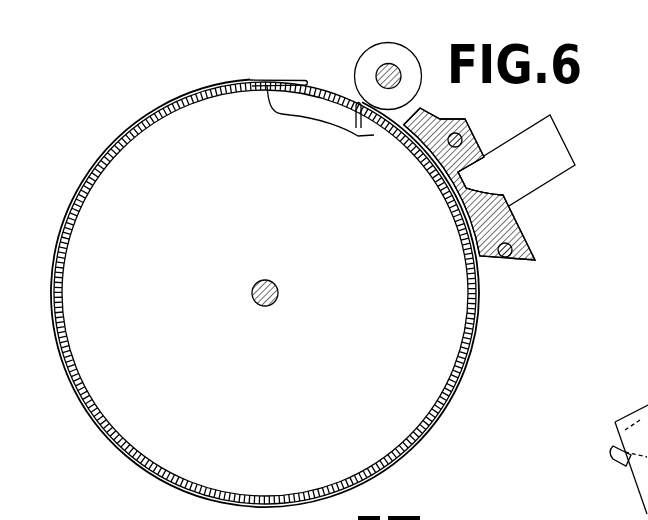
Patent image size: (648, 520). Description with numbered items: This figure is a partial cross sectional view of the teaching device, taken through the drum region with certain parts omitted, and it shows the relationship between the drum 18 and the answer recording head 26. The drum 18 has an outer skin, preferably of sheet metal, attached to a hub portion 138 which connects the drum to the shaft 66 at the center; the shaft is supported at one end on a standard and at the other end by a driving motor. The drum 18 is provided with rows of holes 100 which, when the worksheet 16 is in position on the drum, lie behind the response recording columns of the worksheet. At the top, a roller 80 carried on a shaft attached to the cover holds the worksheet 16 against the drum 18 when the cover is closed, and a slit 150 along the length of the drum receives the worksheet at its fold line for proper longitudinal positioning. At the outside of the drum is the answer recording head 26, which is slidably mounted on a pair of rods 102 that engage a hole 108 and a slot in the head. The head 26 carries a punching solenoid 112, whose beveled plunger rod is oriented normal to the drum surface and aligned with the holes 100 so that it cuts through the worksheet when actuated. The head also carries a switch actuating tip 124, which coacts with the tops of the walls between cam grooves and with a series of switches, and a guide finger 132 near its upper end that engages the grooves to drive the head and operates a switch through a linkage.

The worksheet 16 is at (297, 79).
The drum 18 is at (153, 121).
The answer recording head 26 is at (520, 227).
The shaft 66 is at (282, 286).
The rollers 80 is at (377, 46).
The holes 100 is at (184, 107).
The rods 102 is at (466, 121).
The hole 108 is at (647, 511).
The punching solenoid 112 is at (567, 138).
The actuating tip 124 is at (503, 195).
The guide finger 132 is at (612, 457).
The hub portion 138 is at (128, 174).
The slit 150 is at (362, 112).